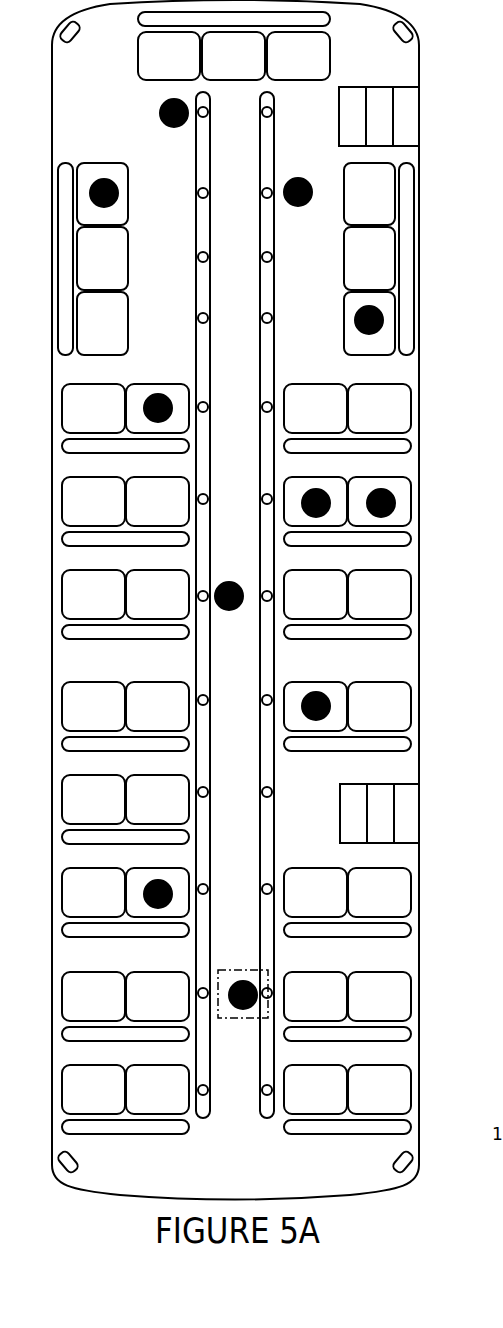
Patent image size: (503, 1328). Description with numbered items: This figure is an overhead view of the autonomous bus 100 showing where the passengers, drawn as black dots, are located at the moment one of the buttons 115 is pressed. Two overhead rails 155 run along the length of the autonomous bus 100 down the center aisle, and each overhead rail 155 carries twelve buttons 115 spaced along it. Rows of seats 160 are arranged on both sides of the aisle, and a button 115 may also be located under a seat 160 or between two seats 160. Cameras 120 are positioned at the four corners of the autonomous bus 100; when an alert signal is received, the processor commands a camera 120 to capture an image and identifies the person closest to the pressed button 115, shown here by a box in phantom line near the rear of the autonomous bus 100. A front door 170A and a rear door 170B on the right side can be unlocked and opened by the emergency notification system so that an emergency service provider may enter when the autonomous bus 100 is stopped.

The autonomous bus 100 is at (419, 198).
The button 115 is at (262, 889).
The camera 120 is at (75, 42).
The overhead rail 155 is at (258, 1068).
The seat 160 is at (128, 322).
The front door 170A is at (420, 117).
The rear door 170B is at (419, 813).